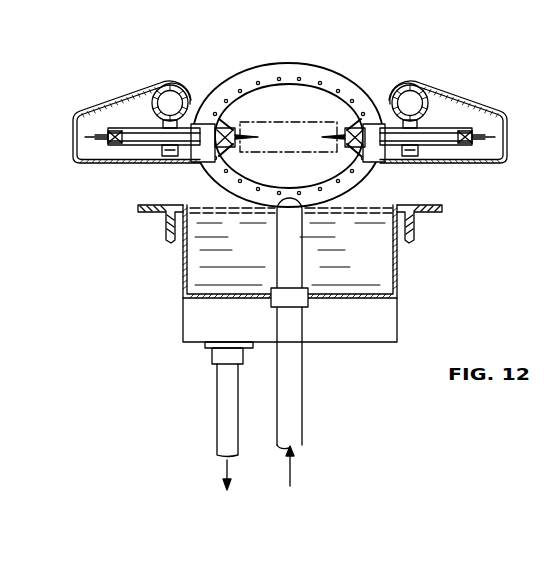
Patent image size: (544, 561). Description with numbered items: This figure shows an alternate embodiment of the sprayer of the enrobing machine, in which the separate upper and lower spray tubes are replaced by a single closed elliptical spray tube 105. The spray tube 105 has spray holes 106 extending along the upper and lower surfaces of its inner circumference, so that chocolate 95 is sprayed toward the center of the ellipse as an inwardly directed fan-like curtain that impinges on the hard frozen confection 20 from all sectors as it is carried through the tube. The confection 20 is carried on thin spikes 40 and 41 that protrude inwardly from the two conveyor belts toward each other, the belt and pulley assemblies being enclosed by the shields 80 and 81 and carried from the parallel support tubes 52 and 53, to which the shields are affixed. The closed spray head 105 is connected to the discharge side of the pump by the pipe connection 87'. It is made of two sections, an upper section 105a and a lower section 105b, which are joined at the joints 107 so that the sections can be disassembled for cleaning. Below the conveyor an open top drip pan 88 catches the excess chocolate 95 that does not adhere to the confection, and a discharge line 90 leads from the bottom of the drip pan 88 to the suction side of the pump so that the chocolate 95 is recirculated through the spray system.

The hard frozen confection 20 is at (296, 125).
The thin spikes 40 is at (339, 126).
The thin spikes 41 is at (242, 126).
The support tube 52 is at (424, 108).
The support tube 53 is at (152, 106).
The shield 80 is at (452, 96).
The shield 81 is at (126, 94).
The pipe connection 87' is at (305, 342).
The drip pan 88 is at (183, 266).
The discharge line 90 is at (222, 358).
The chocolate 95 is at (208, 228).
The closed elliptical spray tube 105 is at (313, 56).
The upper section of spray head 105a is at (347, 88).
The lower section of spray head 105b is at (346, 172).
The spray holes 106 is at (274, 78).
The joints 107 is at (203, 102).